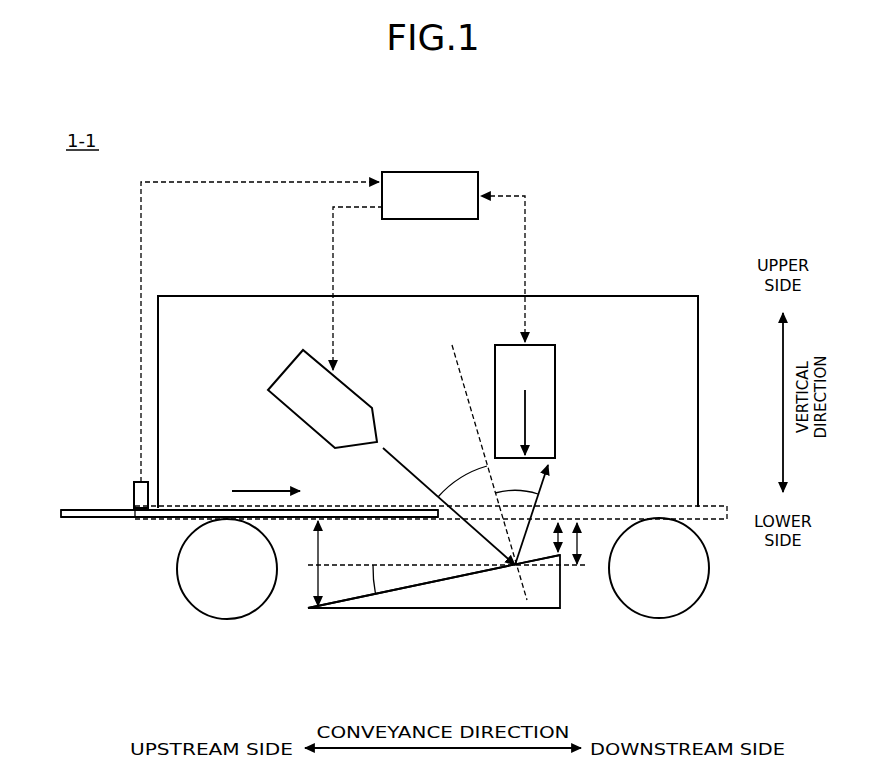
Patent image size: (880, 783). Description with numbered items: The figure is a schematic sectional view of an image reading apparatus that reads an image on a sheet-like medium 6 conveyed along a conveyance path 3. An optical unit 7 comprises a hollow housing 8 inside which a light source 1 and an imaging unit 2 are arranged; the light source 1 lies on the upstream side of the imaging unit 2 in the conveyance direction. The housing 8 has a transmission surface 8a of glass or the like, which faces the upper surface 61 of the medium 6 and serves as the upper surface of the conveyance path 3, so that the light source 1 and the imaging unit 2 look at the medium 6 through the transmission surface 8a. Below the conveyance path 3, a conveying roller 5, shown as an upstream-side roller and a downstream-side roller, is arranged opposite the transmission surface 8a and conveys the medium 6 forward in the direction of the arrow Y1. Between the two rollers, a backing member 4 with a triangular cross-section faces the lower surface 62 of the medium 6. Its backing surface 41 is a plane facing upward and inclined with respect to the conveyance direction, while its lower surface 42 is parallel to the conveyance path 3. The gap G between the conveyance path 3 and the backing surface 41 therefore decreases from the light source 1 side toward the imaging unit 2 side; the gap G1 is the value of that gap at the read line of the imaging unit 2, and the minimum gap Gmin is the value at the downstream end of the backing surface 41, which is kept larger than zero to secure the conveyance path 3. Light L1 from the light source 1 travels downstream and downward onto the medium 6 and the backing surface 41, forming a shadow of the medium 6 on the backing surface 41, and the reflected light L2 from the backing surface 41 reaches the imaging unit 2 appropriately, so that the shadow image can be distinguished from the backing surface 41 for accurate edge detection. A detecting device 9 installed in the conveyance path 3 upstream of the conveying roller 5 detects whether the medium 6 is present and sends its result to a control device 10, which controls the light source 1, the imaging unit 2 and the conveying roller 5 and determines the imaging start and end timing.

The light source 1 is at (300, 348).
The imaging unit 2 is at (510, 345).
The conveyance path 3 is at (727, 508).
The backing member 4 is at (493, 612).
The conveying roller 5 is at (198, 617).
The medium 6 is at (69, 488).
The optical unit 7 is at (575, 293).
The housing 8 is at (653, 296).
The transmission surface 8a is at (587, 506).
The detecting device 9 is at (136, 482).
The control device 10 is at (458, 172).
The backing surface 41 is at (416, 578).
The lower surface 42 is at (455, 609).
The upper surface 61 is at (108, 509).
The lower surface 62 is at (108, 519).
The irradiated light L1 is at (403, 466).
The reflected light L2 is at (548, 487).
The conveyance direction arrow Y1 is at (243, 487).
The gap G is at (306, 563).
The gap at image-pick-up target position G1 is at (593, 543).
The minimum gap Gmin is at (557, 537).